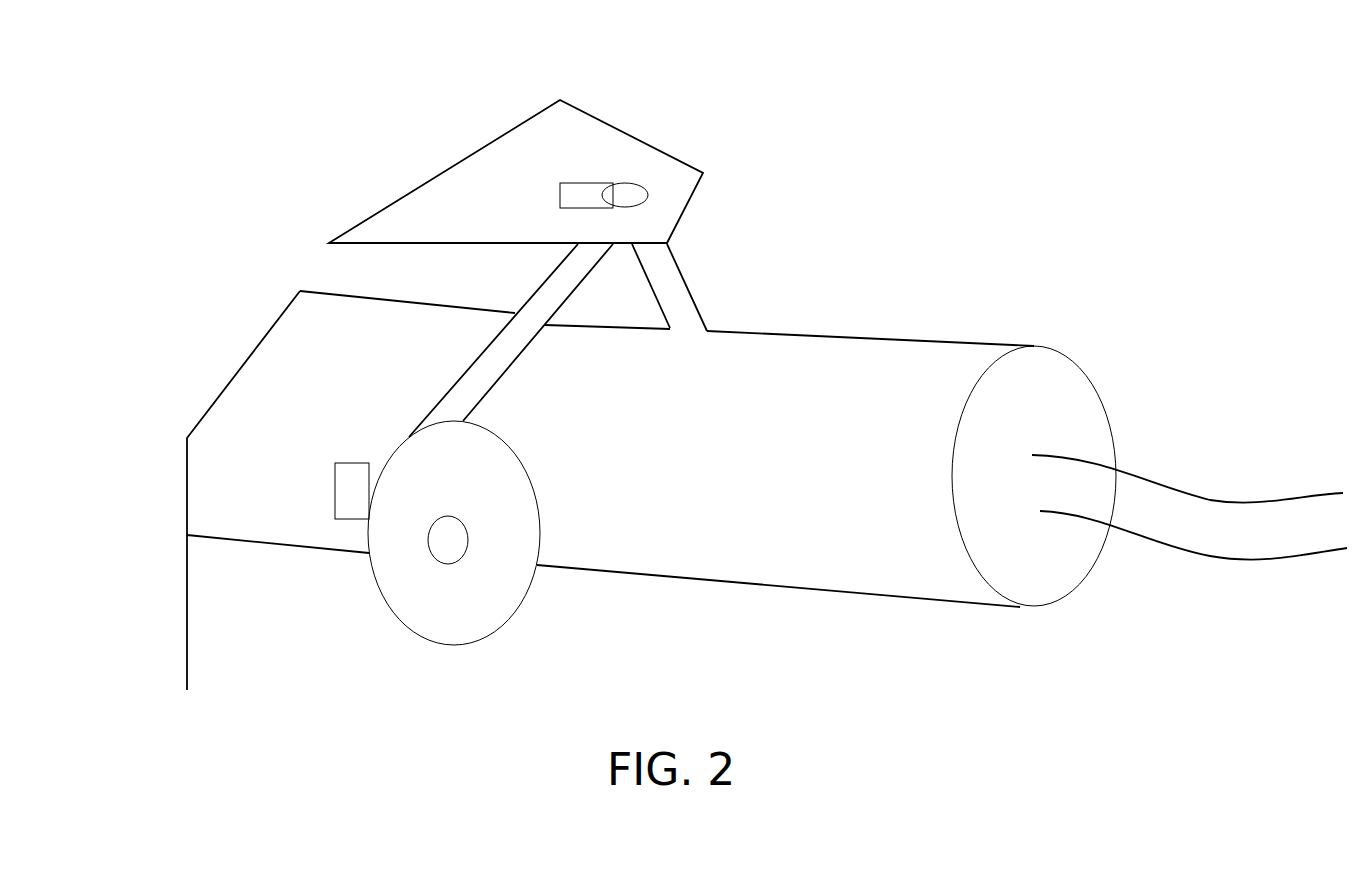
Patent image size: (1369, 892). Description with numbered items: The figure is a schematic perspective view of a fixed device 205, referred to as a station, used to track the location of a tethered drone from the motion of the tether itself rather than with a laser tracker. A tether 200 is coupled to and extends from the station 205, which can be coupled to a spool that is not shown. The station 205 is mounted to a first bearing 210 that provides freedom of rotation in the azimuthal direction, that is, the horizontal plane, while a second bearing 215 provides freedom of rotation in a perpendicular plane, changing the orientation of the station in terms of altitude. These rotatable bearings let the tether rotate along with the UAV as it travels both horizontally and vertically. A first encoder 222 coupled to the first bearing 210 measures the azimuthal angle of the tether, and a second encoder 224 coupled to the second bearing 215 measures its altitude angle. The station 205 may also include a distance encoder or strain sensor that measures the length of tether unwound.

The tether 200 is at (1235, 513).
The fixed device 205 is at (312, 403).
The first bearing 210 is at (623, 194).
The second bearing 215 is at (448, 536).
The first encoder 222 is at (560, 195).
The second encoder 224 is at (335, 490).